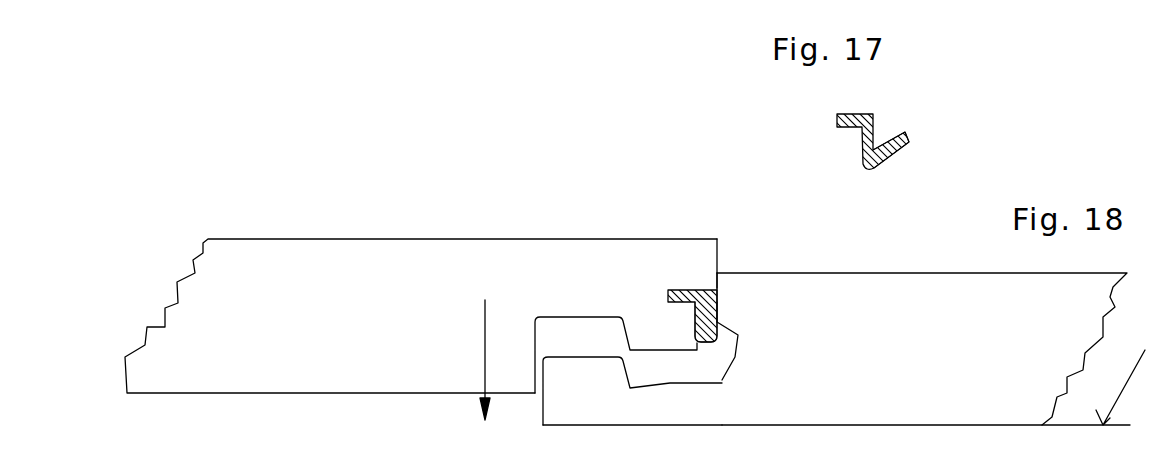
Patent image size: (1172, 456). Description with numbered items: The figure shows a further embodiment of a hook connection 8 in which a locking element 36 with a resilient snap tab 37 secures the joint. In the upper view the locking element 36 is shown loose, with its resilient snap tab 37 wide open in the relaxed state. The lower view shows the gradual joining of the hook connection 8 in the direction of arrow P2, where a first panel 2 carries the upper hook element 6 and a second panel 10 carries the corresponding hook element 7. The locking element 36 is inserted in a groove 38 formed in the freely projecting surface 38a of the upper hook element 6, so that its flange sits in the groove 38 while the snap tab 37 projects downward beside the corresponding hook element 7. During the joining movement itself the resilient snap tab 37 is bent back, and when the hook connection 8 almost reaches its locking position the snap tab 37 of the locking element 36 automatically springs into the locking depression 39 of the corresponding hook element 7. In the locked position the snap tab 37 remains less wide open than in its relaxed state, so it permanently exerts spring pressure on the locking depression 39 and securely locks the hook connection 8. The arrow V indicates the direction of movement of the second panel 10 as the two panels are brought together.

In FIG. 18, the first floor panel 2 is at (300, 309).
In FIG. 18, the upper hook element 6 is at (595, 289).
In FIG. 18, the corresponding hook element 7 is at (657, 418).
In FIG. 18, the hook connection 8 is at (655, 190).
In FIG. 18, the second floor panel 10 is at (1025, 350).
In FIG. 17, the locking element 36 is at (815, 113).
In FIG. 17, the resilient snap tab 37 is at (908, 147).
In FIG. 18, the resilient snap tab 37 is at (718, 302).
In FIG. 18, the groove 38 is at (670, 297).
In FIG. 18, the freely projecting surface 38a is at (730, 256).
In FIG. 18, the locking depression 39 is at (722, 355).
In FIG. 18, the direction of arrow P2 is at (464, 360).
In FIG. 18, the direction of movement V is at (1123, 367).